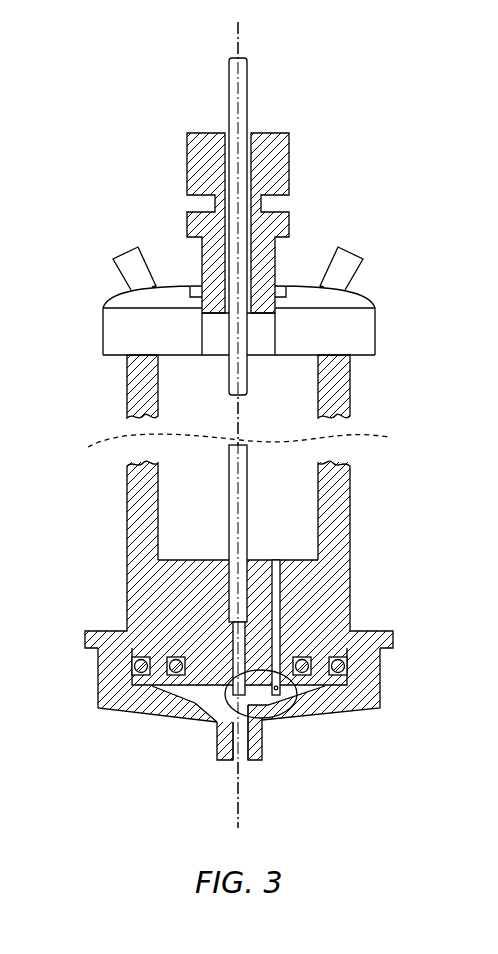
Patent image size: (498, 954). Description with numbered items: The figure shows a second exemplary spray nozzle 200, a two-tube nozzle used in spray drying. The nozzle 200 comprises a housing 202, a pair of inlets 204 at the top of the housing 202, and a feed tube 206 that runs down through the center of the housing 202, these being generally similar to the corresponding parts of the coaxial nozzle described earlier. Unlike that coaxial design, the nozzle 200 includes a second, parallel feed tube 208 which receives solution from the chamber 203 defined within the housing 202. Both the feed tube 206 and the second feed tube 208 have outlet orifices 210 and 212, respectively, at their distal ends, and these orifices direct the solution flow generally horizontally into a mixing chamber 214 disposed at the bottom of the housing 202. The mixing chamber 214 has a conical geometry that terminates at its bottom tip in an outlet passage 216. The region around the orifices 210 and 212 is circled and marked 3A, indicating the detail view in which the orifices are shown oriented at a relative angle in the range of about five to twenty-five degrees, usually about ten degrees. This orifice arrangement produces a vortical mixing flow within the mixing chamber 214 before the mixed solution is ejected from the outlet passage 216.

The spray nozzle 200 is at (82, 85).
The housing 202 is at (352, 528).
The chamber 203 is at (300, 528).
The inlets 204 is at (118, 272).
The feed tube 206 is at (247, 108).
The second feed tube 208 is at (275, 640).
The outlet orifice 210 is at (272, 722).
The outlet orifice 212 is at (307, 697).
The mixing chamber 214 is at (203, 695).
The outlet passage 216 is at (238, 752).
The detail view 3A is at (267, 717).